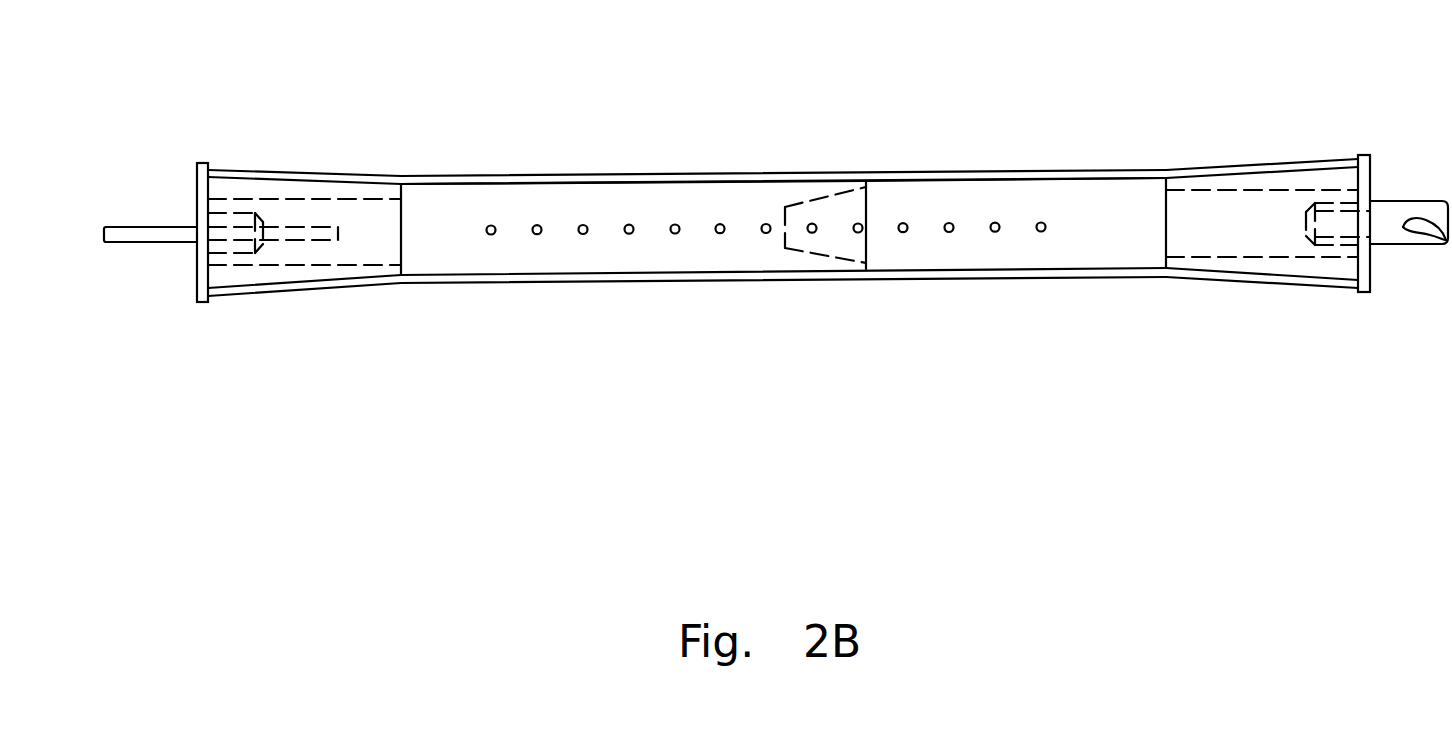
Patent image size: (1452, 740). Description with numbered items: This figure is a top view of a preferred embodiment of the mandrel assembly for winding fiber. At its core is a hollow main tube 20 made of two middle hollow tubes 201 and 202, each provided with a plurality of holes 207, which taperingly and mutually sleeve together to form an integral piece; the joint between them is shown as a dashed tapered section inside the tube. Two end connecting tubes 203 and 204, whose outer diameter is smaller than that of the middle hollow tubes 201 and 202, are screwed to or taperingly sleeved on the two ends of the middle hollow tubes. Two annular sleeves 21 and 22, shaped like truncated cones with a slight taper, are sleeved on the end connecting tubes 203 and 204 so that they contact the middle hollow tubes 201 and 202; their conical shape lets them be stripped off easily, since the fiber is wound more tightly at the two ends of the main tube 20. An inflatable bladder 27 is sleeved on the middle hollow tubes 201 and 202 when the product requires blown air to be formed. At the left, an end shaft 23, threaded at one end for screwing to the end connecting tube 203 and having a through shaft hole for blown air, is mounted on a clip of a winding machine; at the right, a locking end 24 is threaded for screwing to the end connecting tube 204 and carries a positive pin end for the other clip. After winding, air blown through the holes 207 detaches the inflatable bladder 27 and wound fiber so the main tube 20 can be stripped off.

The hollow main tube 20 is at (857, 303).
The annular sleeve 21 is at (232, 171).
The annular sleeve 22 is at (1282, 169).
The end shaft 23 is at (135, 227).
The locking end 24 is at (1407, 201).
The inflatable bladder 27 is at (753, 175).
The middle hollow tube 201 is at (588, 184).
The middle hollow tube 202 is at (958, 181).
The end connecting tube 203 is at (338, 199).
The end connecting tube 204 is at (1225, 190).
The holes 207 is at (491, 225).